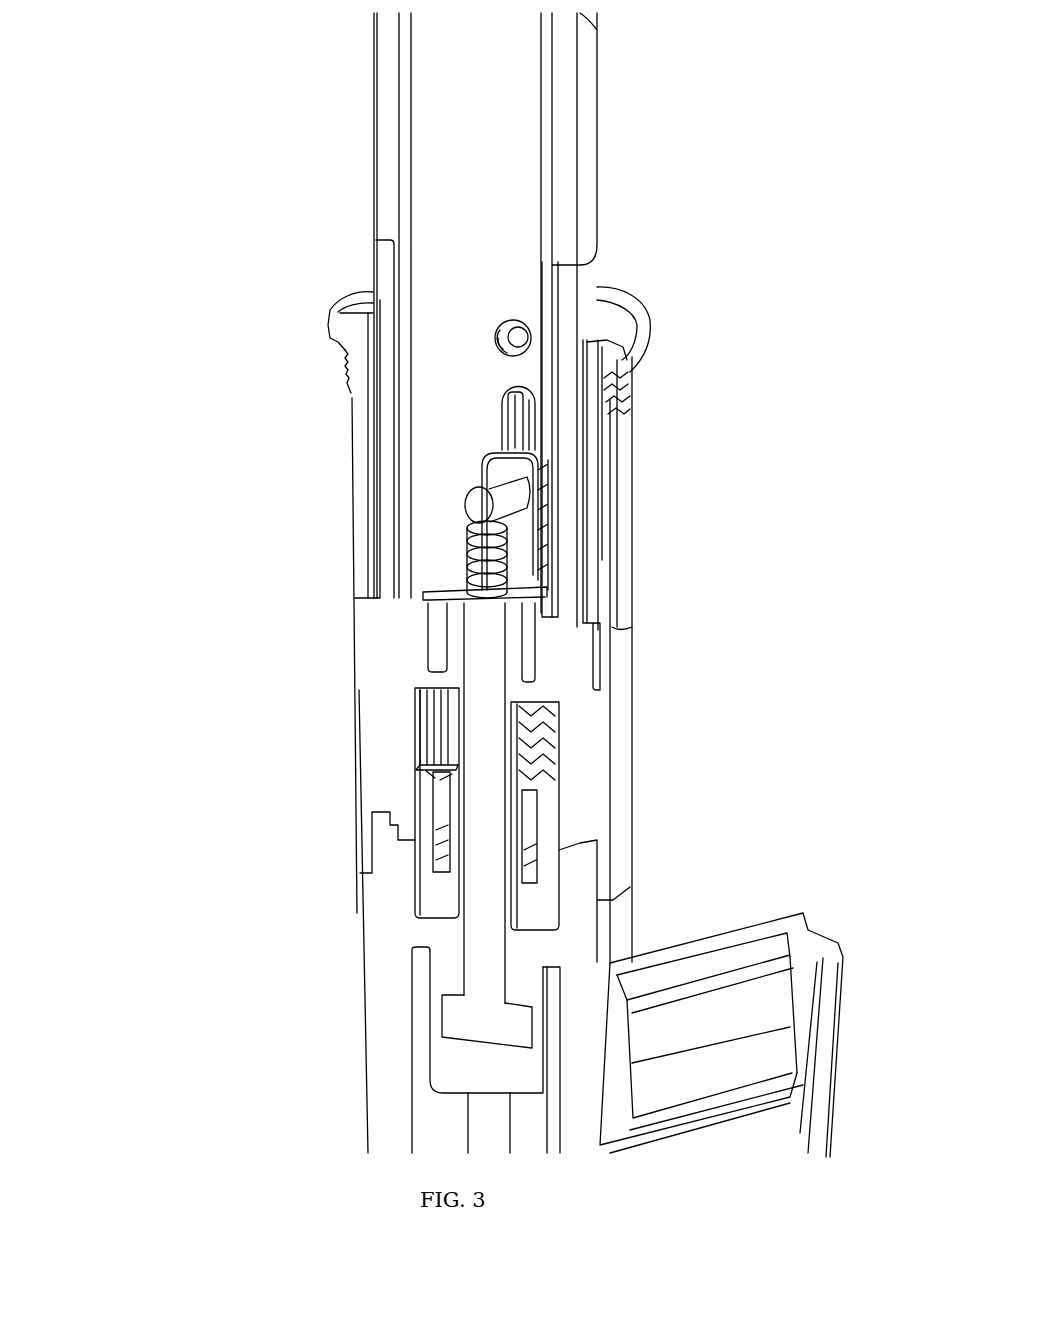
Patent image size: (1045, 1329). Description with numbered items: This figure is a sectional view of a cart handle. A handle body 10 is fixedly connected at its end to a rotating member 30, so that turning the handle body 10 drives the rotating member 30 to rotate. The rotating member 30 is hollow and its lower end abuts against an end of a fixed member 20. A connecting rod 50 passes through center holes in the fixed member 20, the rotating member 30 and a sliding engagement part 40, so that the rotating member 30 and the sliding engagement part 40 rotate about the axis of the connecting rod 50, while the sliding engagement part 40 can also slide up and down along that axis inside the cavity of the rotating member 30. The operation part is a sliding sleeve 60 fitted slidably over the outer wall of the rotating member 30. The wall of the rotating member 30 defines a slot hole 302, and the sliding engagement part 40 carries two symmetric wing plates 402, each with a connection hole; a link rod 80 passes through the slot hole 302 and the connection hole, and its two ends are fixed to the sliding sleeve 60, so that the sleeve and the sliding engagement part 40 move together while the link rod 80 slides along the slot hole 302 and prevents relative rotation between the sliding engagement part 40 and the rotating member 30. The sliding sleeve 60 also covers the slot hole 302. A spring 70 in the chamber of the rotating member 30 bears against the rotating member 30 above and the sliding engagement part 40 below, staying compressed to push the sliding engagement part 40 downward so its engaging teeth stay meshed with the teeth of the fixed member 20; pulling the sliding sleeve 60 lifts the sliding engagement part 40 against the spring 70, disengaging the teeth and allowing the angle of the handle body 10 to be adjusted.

The handle body 10 is at (385, 168).
The fixed member 20 is at (390, 977).
The rotating member 30 is at (587, 752).
The sliding engagement part 40 is at (433, 889).
The connecting rod 50 is at (433, 748).
The sliding sleeve 60 is at (613, 494).
The spring 70 is at (487, 745).
The link rod 80 is at (485, 505).
The slot hole 302 is at (522, 421).
The wing plate 402 is at (527, 568).